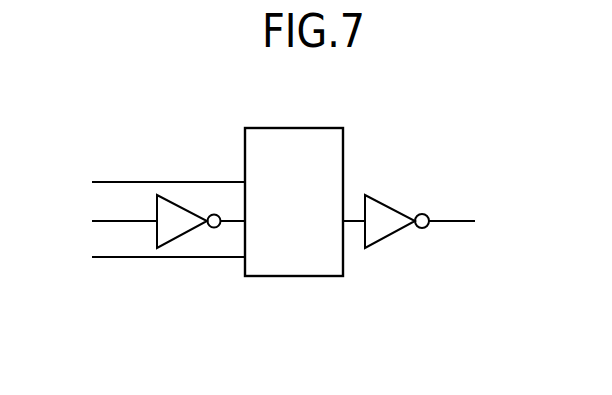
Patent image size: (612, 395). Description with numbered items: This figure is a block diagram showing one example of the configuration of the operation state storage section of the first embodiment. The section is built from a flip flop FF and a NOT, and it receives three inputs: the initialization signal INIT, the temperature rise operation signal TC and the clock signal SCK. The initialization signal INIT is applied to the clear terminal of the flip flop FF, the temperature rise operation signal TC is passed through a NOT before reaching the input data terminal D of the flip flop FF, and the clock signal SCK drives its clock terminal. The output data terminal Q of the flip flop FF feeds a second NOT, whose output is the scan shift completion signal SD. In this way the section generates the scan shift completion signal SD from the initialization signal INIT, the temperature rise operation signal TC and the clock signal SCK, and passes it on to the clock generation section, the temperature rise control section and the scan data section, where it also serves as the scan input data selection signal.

The initialization signal INIT is at (140, 183).
The temperature rise operation signal TC is at (153, 221).
The clock signal SCK is at (147, 257).
The flip flop FF is at (294, 202).
The scan shift completion signal SD is at (424, 221).